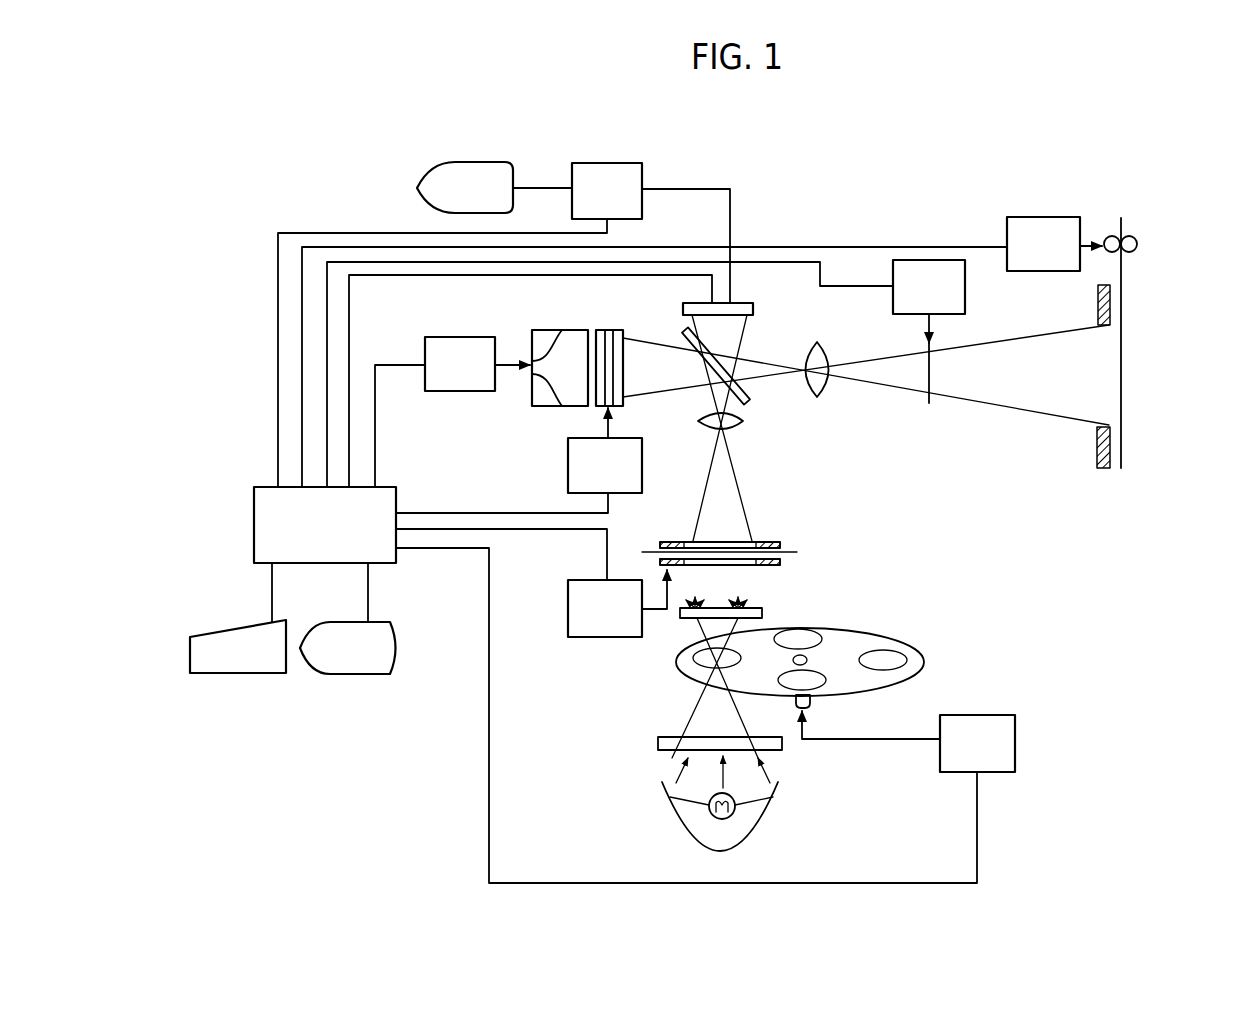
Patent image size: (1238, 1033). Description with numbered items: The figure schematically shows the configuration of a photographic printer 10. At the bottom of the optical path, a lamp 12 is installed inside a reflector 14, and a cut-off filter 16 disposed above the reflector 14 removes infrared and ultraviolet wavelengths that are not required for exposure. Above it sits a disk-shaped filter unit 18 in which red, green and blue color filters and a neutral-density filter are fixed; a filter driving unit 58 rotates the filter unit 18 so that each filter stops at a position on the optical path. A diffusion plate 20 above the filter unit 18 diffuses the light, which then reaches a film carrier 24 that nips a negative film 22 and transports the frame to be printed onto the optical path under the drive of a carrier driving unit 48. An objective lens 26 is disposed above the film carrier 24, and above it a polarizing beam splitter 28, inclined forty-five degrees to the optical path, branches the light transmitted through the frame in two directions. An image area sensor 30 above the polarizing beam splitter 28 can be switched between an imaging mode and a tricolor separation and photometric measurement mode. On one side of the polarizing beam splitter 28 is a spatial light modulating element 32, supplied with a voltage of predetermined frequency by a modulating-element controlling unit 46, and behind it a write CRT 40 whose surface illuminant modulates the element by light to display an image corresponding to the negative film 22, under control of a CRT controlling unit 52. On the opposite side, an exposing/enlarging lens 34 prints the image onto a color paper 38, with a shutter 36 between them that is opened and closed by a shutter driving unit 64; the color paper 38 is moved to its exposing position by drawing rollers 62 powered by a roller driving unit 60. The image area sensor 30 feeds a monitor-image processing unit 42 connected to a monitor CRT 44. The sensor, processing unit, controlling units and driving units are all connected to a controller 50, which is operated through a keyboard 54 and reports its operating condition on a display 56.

The photographic printer 10 is at (880, 198).
The lamp 12 is at (734, 813).
The reflector 14 is at (680, 832).
The cut-off filter 16 is at (657, 743).
The filter unit 18 is at (896, 640).
The diffusion plate 20 is at (765, 612).
The negative film 22 is at (790, 549).
The film carrier 24 is at (658, 560).
The objective lens 26 is at (735, 427).
The polarizing beam splitter 28 is at (748, 395).
The image area sensor 30 is at (753, 307).
The spatial light modulating element 32 is at (609, 330).
The exposing/enlarging lens 34 is at (823, 390).
The shutter 36 is at (930, 395).
The color paper 38 is at (1122, 277).
The write CRT 40 is at (580, 330).
The monitor-image processing unit 42 is at (635, 163).
The monitor CRT 44 is at (490, 162).
The modulating-element controlling unit 46 is at (568, 468).
The carrier driving unit 48 is at (568, 612).
The controller 50 is at (254, 527).
The CRT controlling unit 52 is at (480, 337).
The keyboard 54 is at (237, 673).
The display 56 is at (361, 674).
The filter driving unit 58 is at (1015, 739).
The roller driving unit 60 is at (1044, 217).
The drawing rollers 62 is at (1120, 234).
The shutter driving unit 64 is at (965, 287).